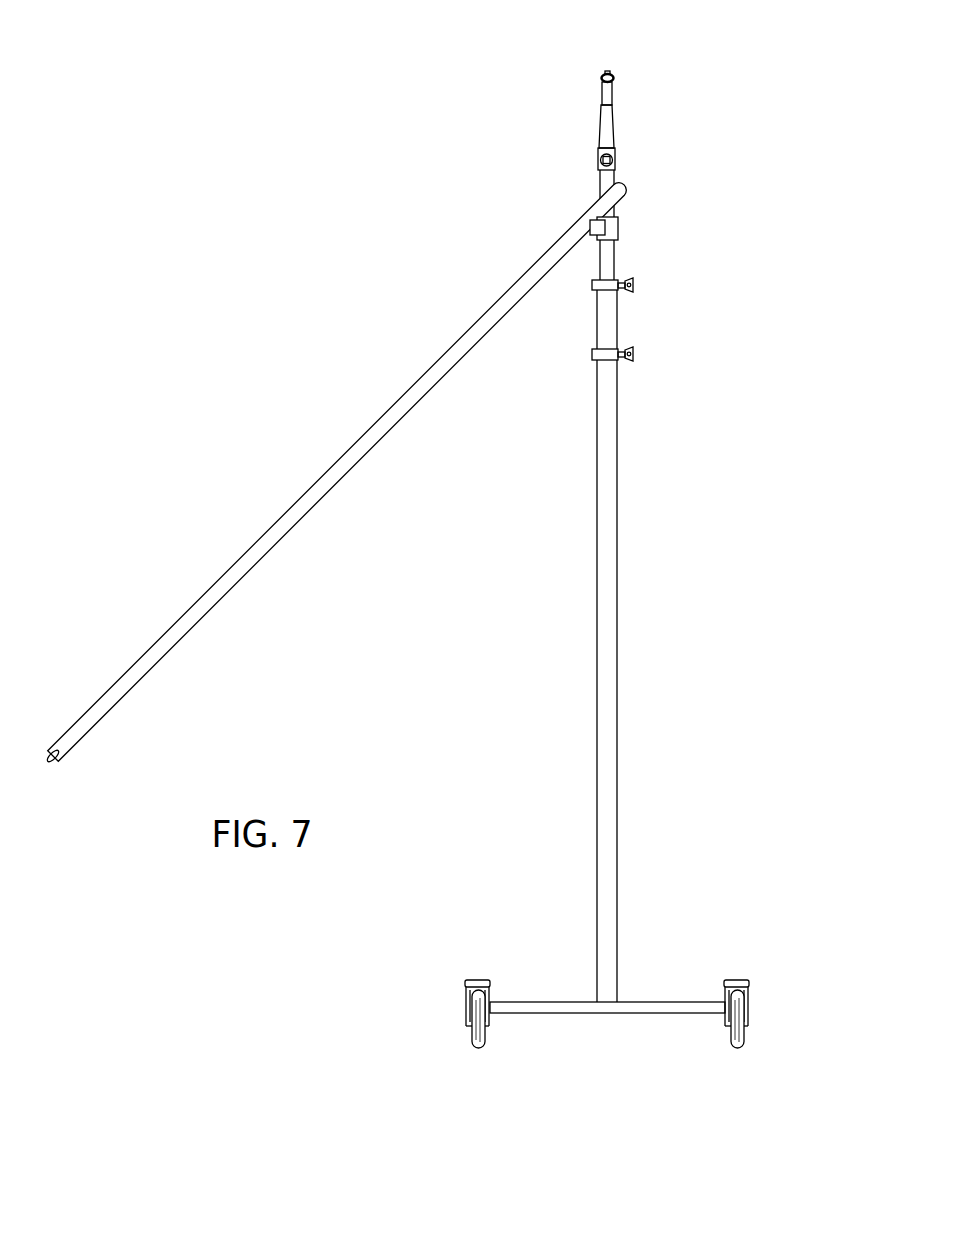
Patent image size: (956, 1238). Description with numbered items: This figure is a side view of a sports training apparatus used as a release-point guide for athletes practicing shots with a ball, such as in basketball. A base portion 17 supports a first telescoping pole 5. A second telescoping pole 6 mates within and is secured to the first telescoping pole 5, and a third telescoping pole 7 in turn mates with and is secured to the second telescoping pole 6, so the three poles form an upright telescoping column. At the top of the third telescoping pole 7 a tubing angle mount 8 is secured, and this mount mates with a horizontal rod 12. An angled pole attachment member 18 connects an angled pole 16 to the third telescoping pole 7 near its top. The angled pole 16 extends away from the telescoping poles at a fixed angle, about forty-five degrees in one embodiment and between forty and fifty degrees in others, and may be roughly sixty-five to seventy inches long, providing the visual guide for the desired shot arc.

The first telescoping pole 5 is at (618, 688).
The second telescoping pole 6 is at (617, 318).
The third telescoping pole 7 is at (600, 182).
The tubing angle mount 8 is at (617, 160).
The horizontal rod 12 is at (607, 125).
The angled pole 16 is at (383, 413).
The base portion 17 is at (685, 1003).
The angled pole attachment member 18 is at (600, 228).